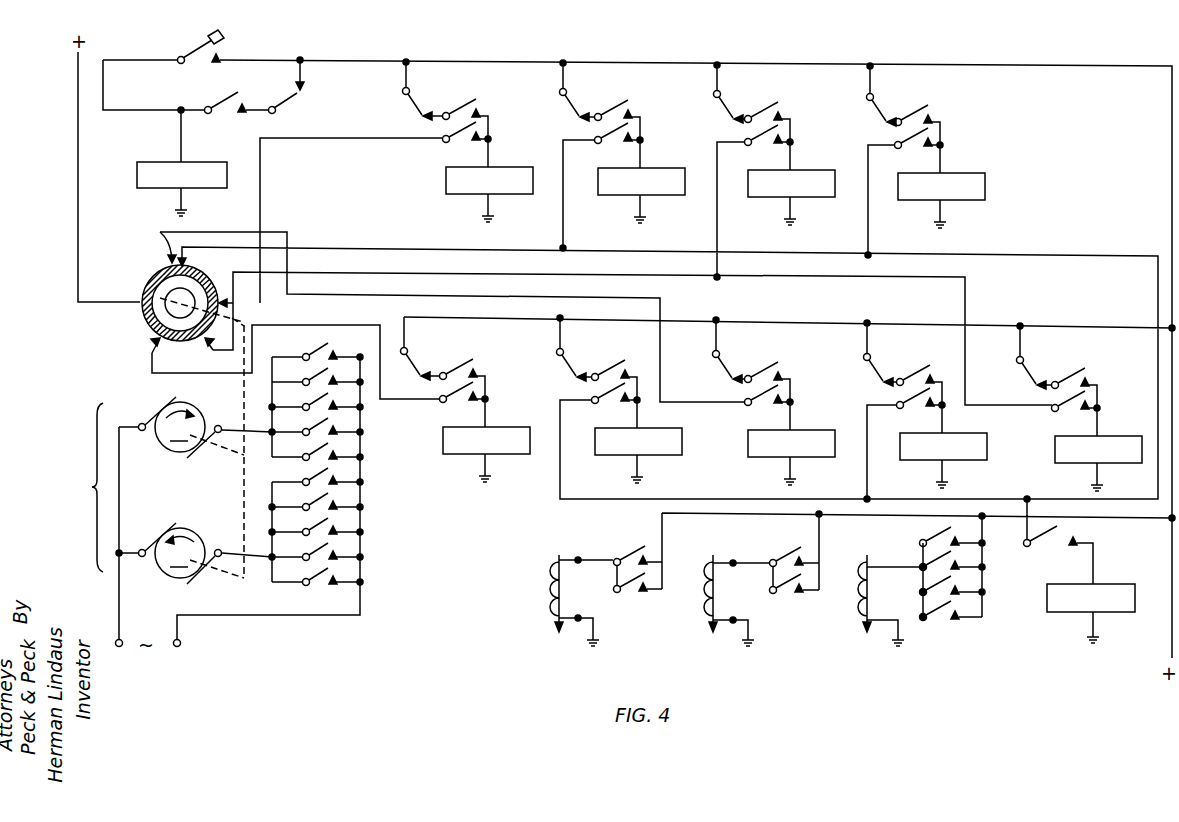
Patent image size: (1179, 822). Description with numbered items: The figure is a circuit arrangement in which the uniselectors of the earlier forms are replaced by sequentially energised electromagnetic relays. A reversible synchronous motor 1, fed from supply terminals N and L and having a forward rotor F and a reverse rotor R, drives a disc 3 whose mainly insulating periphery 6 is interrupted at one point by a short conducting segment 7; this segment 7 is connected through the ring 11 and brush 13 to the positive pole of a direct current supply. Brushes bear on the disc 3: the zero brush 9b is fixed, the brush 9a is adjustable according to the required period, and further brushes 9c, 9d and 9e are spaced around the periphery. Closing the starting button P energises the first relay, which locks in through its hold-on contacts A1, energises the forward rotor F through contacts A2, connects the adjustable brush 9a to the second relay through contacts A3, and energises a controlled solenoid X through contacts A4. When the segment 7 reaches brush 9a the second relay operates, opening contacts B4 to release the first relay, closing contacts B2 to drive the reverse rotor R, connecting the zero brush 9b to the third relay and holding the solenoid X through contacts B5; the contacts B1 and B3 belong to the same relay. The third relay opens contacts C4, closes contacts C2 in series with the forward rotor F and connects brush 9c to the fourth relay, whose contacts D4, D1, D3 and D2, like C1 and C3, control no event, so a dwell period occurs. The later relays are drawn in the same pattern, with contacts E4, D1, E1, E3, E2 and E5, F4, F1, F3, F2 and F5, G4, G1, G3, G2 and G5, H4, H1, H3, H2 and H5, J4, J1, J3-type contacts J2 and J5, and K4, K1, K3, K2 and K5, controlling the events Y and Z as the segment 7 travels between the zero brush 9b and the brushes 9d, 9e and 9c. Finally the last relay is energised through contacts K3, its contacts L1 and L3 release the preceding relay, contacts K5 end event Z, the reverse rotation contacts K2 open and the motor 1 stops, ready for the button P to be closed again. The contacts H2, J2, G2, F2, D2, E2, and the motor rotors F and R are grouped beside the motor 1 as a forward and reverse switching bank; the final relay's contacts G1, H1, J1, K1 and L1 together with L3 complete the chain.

The starting switch or button P is at (198, 50).
The hold-on contacts A1 is at (222, 104).
The contacts B4 is at (292, 100).
The disc 3 is at (143, 320).
The conducting segment 7 is at (194, 276).
The brush 13 is at (178, 300).
The ring 11 is at (178, 318).
The mainly insulating periphery 6 is at (218, 333).
The adjustable brush 9a is at (219, 297).
The zero brush 9b is at (150, 243).
The brush 9c is at (197, 358).
The brush 9d is at (152, 342).
The brush 9e is at (160, 266).
The contacts C4 is at (410, 105).
The contacts B1 is at (462, 107).
The contacts A3 is at (452, 141).
The contacts D4 is at (567, 106).
The contacts C1 is at (614, 108).
The contacts B3 is at (604, 142).
The contacts E4 is at (721, 108).
The contacts D1 is at (764, 110).
The contacts C3 is at (754, 144).
The contacts F4 is at (874, 111).
The contacts E1 is at (914, 113).
The contacts D3 is at (904, 147).
The contacts G4 is at (408, 365).
The contacts F1 is at (459, 367).
The contacts E3 is at (449, 401).
The contacts H4 is at (564, 366).
The contacts G1 is at (611, 368).
The contacts F3 is at (601, 402).
The contacts J4 is at (720, 368).
The contacts H1 is at (764, 370).
The contacts G3 is at (754, 404).
The contacts K4 is at (871, 371).
The contacts J1 is at (916, 373).
The contacts H3 is at (906, 407).
The contacts L1 is at (1024, 374).
The contacts K1 is at (1071, 376).
The contacts L3 is at (1061, 410).
The contacts A2 is at (317, 351).
The contacts C2 is at (317, 376).
The contacts E2 is at (317, 401).
The contacts H2 is at (317, 426).
The contacts J2 is at (317, 451).
The contacts B2 is at (317, 476).
The contacts D2 is at (317, 501).
The contacts F2 is at (317, 526).
The contacts G2 is at (317, 551).
The reverse rotation contacts K2 is at (317, 576).
The forward rotor F is at (180, 427).
The reverse rotor R is at (180, 553).
The synchronous motor 1 is at (88, 487).
The neutral supply terminal N is at (115, 657).
The line supply terminal L is at (176, 657).
The controlled solenoid X is at (546, 592).
The event Y is at (702, 592).
The event Z is at (860, 600).
The contacts A4 is at (624, 555).
The contacts B5 is at (629, 592).
The contacts E5 is at (780, 556).
The contacts F5 is at (784, 593).
The contacts G5 is at (930, 537).
The contacts H5 is at (937, 559).
The contacts J5 is at (930, 584).
The contacts K5 is at (930, 608).
The contacts K3 is at (1060, 545).